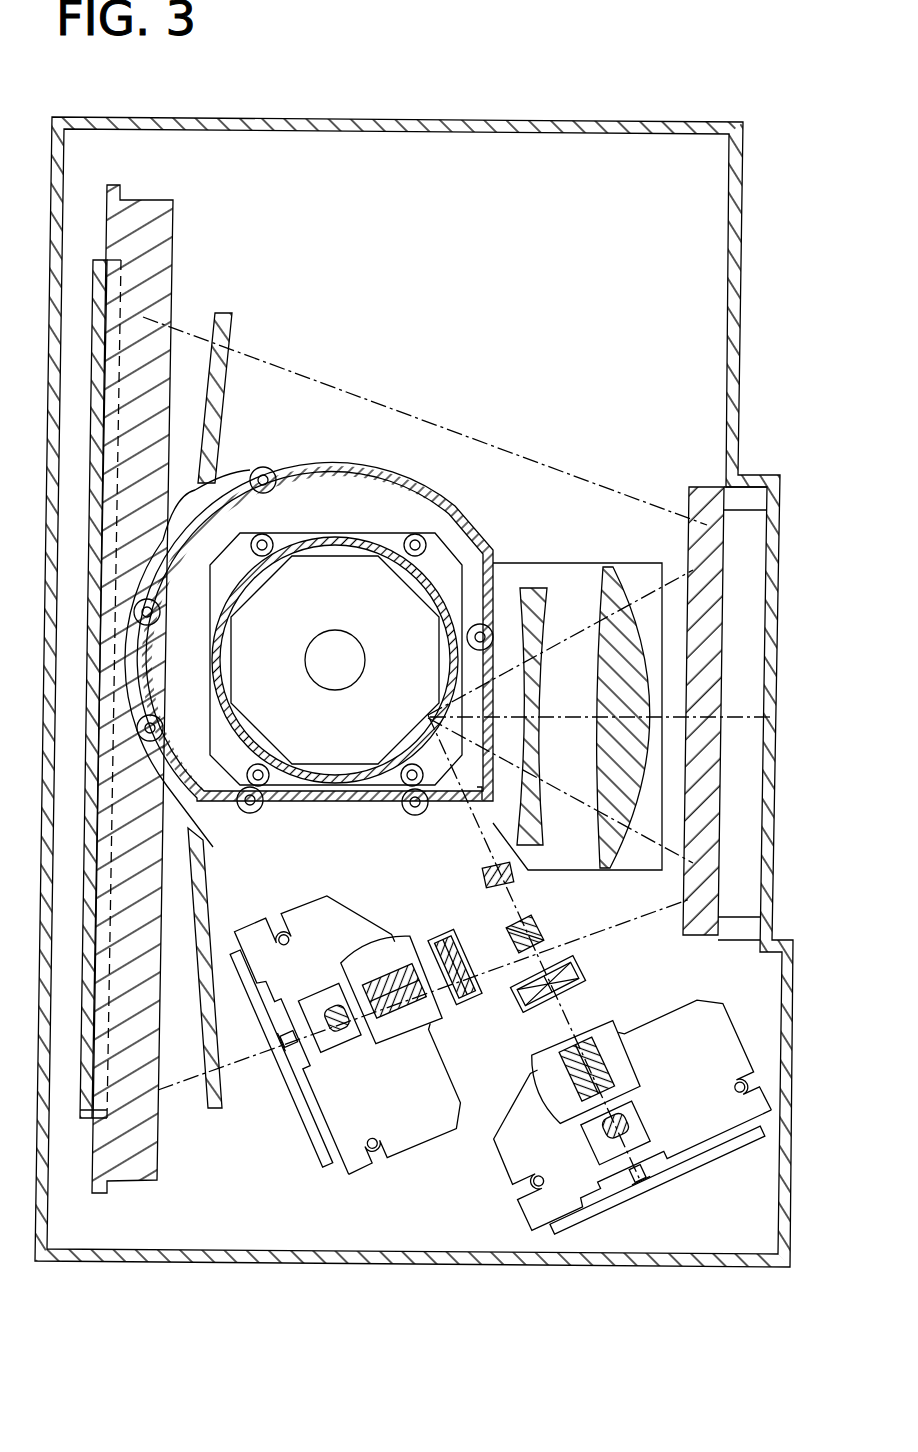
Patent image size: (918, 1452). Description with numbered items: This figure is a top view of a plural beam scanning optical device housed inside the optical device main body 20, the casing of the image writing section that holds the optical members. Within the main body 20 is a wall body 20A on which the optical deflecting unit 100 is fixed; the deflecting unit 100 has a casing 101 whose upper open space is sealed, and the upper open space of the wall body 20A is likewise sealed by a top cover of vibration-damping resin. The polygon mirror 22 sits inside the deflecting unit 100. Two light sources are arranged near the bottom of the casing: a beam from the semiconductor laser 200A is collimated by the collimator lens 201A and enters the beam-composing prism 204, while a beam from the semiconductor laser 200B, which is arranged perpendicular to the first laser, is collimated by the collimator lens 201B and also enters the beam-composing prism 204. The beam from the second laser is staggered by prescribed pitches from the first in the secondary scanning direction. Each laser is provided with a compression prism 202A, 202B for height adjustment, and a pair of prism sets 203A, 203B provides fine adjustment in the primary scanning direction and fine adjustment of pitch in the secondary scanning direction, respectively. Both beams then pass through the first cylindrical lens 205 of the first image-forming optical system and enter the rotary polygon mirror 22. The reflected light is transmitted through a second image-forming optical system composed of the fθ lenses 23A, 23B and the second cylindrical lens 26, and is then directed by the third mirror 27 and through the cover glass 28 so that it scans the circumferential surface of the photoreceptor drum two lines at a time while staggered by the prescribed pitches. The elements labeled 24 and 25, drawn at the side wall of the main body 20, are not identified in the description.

The optical device main body 20 is at (745, 178).
The wall body 20A is at (342, 464).
The polygon mirror 22 is at (410, 605).
The fθ lens 23A is at (536, 587).
The fθ lens 23B is at (607, 567).
The mirror 24 is at (697, 485).
The mirror plate 25 is at (742, 713).
The second cylindrical lens 26 is at (224, 313).
The third mirror 27 is at (173, 208).
The cover glass 28 is at (85, 1118).
The optical deflecting unit 100 is at (322, 512).
The casing 101 is at (363, 540).
The semiconductor laser 200A is at (636, 1163).
The semiconductor laser 200B is at (302, 1063).
The collimator lens 201A is at (632, 1168).
The collimator lens 201B is at (330, 1040).
The compression prism 202A is at (572, 1070).
The compression prism 202B is at (407, 1017).
The prism set 203A is at (584, 972).
The prism set 203B is at (432, 938).
The beam-composing prism 204 is at (545, 928).
The first cylindrical lens 205 is at (483, 863).